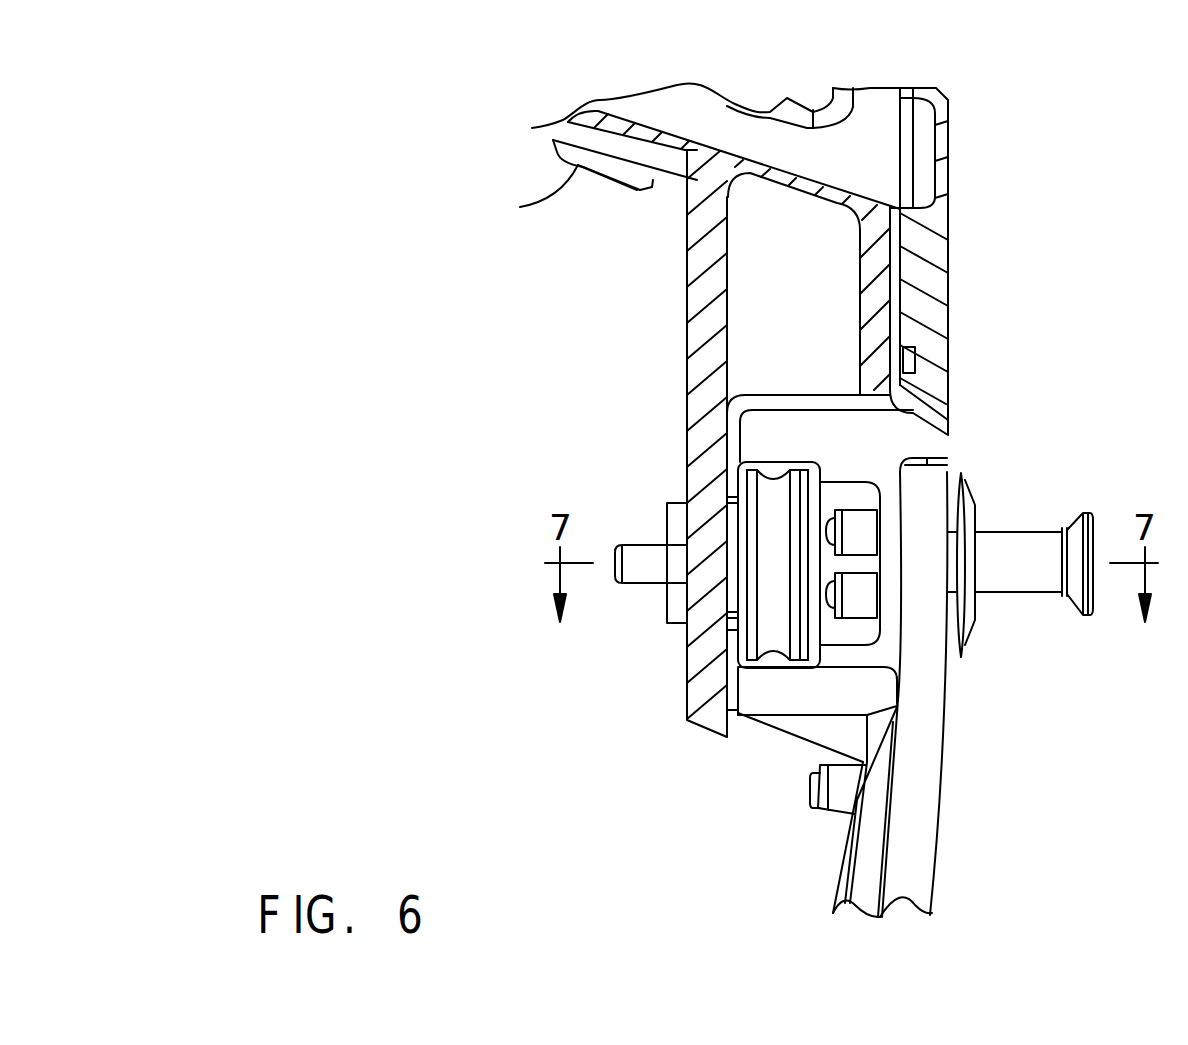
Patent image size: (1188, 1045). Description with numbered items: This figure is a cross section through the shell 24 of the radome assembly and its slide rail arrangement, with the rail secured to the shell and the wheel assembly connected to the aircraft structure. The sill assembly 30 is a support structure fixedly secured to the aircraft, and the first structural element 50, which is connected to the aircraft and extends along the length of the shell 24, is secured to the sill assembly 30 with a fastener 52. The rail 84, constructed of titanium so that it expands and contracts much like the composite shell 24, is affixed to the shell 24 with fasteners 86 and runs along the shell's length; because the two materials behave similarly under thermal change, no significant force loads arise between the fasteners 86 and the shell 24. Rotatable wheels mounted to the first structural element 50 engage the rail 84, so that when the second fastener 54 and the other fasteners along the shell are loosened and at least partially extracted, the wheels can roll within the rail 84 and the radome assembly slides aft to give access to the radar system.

The shell 24 is at (913, 798).
The sill assembly 30 is at (872, 120).
The first structural element 50 is at (708, 688).
The fastener 52 is at (578, 165).
The second fastener 54 is at (1041, 552).
The rail 84 is at (870, 445).
The fasteners 86 is at (856, 528).